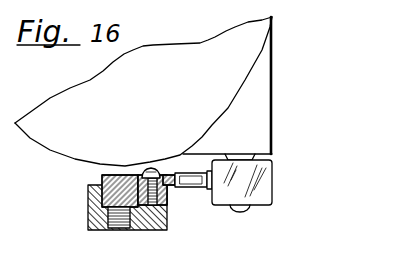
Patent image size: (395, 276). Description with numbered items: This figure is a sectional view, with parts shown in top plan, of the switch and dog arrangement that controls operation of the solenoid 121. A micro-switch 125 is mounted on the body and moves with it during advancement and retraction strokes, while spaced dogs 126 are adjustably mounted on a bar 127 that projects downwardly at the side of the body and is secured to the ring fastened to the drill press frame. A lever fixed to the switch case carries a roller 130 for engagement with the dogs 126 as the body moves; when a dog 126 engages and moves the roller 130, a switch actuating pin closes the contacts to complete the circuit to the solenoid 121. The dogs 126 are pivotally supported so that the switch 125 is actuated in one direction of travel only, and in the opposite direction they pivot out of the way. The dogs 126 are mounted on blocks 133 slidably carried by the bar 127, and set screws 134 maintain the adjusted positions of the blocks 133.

The solenoid 121 is at (8, 240).
The micro-switch 125 is at (263, 187).
The dogs 126 is at (172, 175).
The bar 127 is at (117, 176).
The roller 130 is at (192, 172).
The blocks 133 is at (101, 229).
The set screws 134 is at (130, 231).